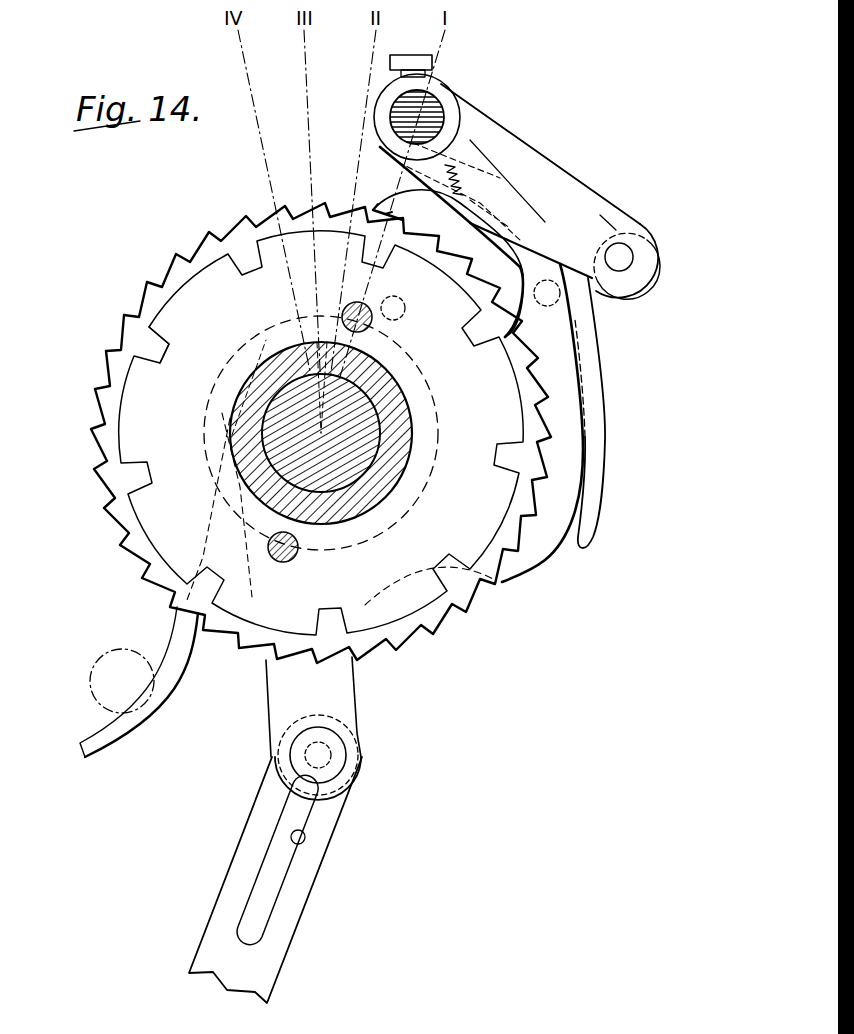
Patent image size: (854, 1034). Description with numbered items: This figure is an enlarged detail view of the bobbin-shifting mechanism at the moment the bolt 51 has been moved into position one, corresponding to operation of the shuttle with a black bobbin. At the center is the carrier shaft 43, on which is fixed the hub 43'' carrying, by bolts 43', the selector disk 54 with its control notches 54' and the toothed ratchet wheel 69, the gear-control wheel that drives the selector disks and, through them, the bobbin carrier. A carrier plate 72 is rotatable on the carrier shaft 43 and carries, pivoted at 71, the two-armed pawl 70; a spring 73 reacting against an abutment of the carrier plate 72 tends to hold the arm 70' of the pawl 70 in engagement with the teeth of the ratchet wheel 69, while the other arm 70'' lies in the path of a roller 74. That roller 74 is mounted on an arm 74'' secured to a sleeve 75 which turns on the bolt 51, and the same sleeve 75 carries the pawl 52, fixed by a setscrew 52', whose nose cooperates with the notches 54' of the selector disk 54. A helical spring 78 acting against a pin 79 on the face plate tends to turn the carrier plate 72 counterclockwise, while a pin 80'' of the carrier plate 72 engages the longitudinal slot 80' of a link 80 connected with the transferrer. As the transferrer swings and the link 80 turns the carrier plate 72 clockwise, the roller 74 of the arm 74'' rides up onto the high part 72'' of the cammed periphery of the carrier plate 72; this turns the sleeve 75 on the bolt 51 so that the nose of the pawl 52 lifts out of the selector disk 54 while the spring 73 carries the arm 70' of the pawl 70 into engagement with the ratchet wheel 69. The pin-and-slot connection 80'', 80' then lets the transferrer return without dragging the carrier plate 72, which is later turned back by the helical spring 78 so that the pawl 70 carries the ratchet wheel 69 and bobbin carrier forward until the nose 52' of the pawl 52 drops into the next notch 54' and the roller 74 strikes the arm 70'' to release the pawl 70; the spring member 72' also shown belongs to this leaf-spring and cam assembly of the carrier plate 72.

The carrier shaft 43 is at (341, 433).
The bolts 43' is at (335, 446).
The hub 43'' is at (369, 442).
The bolt 51 is at (440, 110).
The pawl 52 is at (510, 210).
The setscrew / nose of the pawl 52' is at (456, 200).
The selector disk 54 is at (311, 433).
The control notches 54' is at (118, 332).
The ratchet wheel 69 is at (178, 266).
The two-armed pawl 70 is at (448, 263).
The arm of the pawl 70' is at (360, 174).
The arm of the pawl 70'' is at (624, 413).
The pivot 71 is at (580, 300).
The carrier plate 72 is at (359, 192).
The leaf spring 72' is at (539, 412).
The high part of the carrier plate 72'' is at (588, 213).
The spring 73 is at (476, 197).
The roller 74 is at (657, 261).
The arm 74'' is at (613, 196).
The sleeve 75 is at (405, 135).
The helical spring 78 is at (176, 632).
The pin 79 is at (105, 668).
The link 80 is at (275, 880).
The longitudinal slot 80' is at (315, 859).
The pin 80'' is at (352, 728).